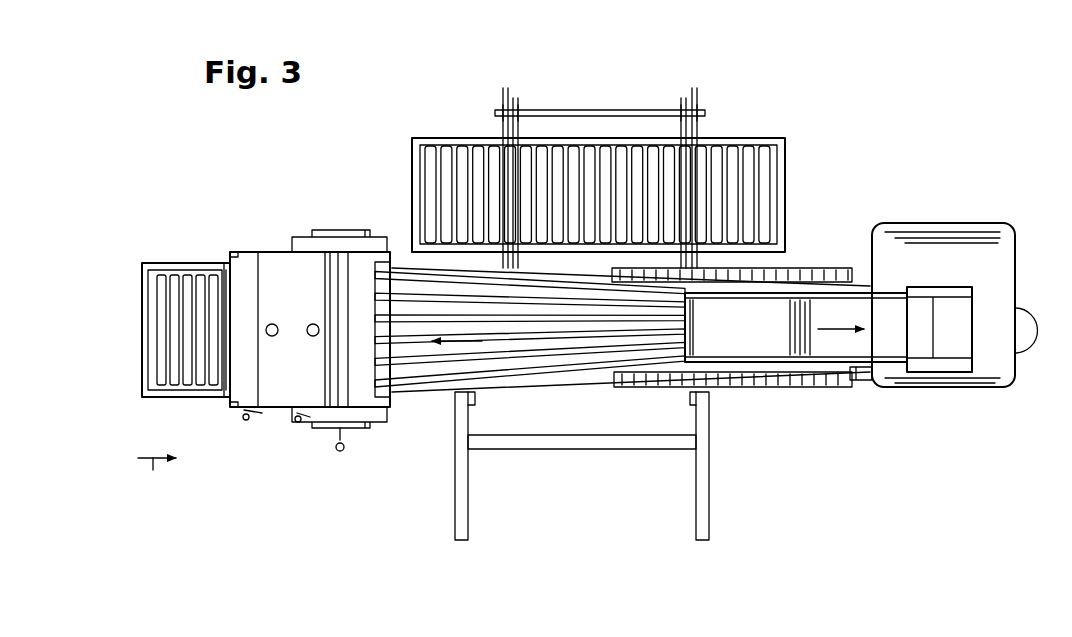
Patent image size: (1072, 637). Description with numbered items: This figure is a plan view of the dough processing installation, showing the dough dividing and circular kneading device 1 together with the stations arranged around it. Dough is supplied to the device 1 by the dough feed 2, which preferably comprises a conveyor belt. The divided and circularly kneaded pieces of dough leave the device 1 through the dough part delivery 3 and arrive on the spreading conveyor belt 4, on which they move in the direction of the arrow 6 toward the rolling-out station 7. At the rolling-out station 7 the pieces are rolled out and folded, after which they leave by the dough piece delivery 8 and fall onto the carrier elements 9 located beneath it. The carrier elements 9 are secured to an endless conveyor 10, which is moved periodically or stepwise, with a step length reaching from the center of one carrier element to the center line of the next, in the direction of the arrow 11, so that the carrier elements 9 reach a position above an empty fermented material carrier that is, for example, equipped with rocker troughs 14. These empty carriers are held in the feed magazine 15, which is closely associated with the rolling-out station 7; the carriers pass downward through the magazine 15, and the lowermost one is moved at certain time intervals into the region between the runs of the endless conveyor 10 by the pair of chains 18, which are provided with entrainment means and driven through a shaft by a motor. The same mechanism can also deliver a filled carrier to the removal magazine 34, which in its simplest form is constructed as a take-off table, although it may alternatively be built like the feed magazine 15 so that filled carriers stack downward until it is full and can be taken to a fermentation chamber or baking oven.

The dough dividing and circular kneading device 1 is at (998, 243).
The dough feed 2 is at (826, 318).
The dough part delivery 3 is at (862, 381).
The spreading conveyor belt 4 is at (541, 357).
The arrow 6 is at (475, 345).
The rolling-out station 7 is at (267, 266).
The dough piece delivery 8 is at (238, 282).
The carrier elements 9 is at (213, 398).
The endless conveyor 10 is at (227, 398).
The arrow 11 is at (157, 478).
The rocker troughs 14 is at (763, 155).
The magazine 15 is at (430, 134).
The pair of chains 18 is at (512, 250).
The removal magazine 34 is at (469, 508).